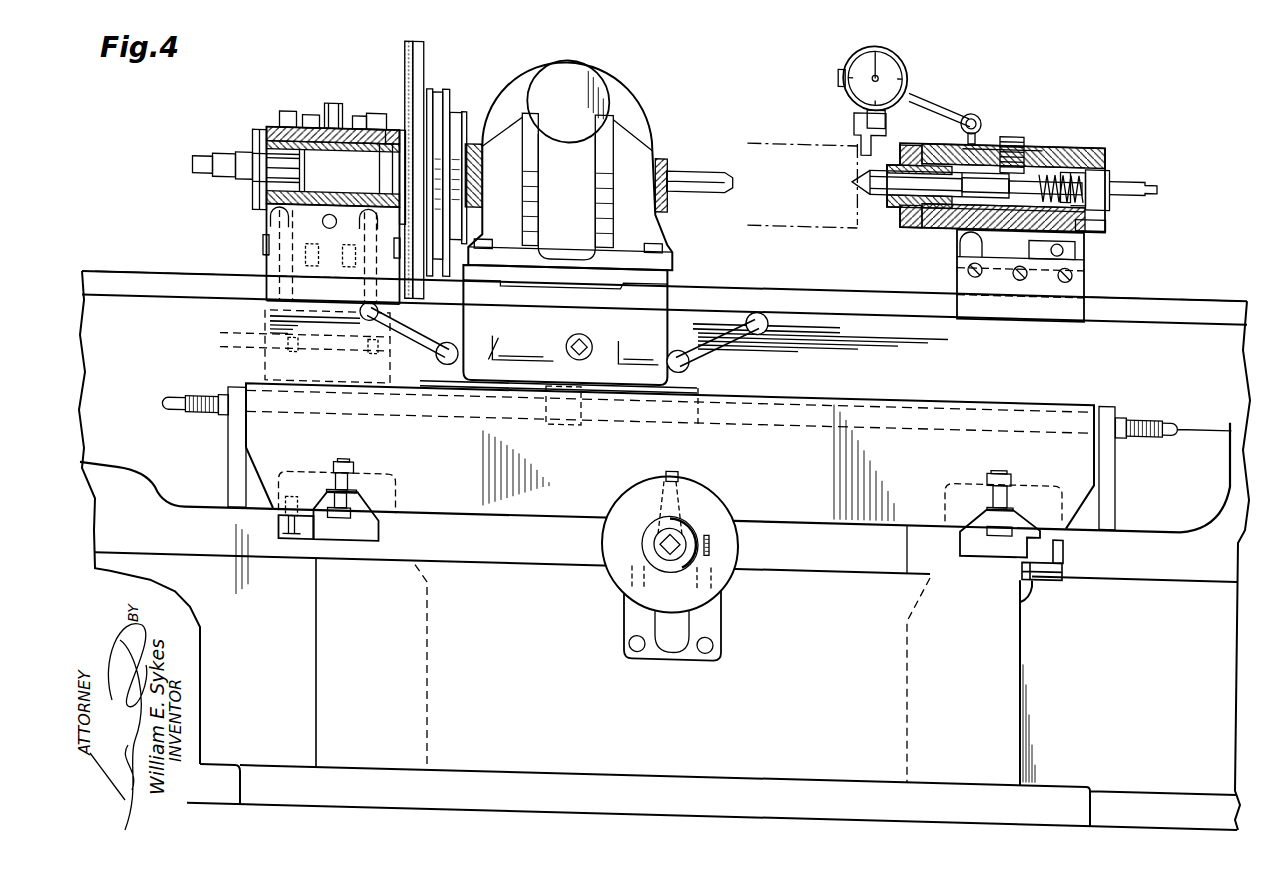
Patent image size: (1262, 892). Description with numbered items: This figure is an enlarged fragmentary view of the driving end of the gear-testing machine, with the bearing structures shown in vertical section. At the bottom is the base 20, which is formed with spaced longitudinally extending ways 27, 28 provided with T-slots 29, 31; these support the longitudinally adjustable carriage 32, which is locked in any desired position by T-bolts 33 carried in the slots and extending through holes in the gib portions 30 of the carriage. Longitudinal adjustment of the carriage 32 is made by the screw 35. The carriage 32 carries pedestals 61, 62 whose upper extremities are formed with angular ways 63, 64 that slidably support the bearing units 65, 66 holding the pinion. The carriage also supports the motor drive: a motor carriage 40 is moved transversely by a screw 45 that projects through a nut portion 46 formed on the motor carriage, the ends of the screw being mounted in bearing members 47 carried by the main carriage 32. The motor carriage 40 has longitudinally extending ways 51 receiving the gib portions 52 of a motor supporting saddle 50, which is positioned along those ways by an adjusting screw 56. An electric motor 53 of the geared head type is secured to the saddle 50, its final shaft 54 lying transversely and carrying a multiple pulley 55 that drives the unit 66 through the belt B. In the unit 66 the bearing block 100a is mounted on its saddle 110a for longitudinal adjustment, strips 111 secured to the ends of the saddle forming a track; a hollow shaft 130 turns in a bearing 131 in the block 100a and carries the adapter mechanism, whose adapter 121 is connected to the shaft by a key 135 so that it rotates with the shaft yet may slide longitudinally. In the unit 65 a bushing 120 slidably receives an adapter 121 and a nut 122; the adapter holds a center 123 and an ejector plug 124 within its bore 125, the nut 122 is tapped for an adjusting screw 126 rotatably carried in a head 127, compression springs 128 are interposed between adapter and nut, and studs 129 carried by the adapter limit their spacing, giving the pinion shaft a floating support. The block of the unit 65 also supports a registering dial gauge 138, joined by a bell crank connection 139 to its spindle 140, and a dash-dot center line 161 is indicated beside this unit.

The base 20 is at (664, 550).
The longitudinally extending way 27 is at (1063, 530).
The longitudinally extending way 28 is at (350, 545).
The T-slot 29 is at (1062, 550).
The gib portion 30 is at (313, 513).
The T-slot 31 is at (345, 542).
The carriage 32 is at (665, 499).
The T-bolt 33 is at (335, 460).
The screw 35 is at (660, 550).
The motor carriage 40 is at (700, 355).
The transverse screw 45 is at (1150, 420).
The nut portion 46 is at (570, 425).
The bearing member 47 is at (226, 470).
The motor supporting saddle 50 is at (565, 325).
The longitudinally extending way 51 is at (682, 370).
The gib portion 52 is at (690, 385).
The electric motor 53 is at (645, 112).
The final shaft 54 is at (700, 176).
The multiple pulley 55 is at (437, 90).
The adjusting screw 56 is at (580, 340).
The pedestal 61 is at (1110, 292).
The pedestal 62 is at (148, 263).
The angular way 63 is at (1208, 292).
The angular way 64 is at (203, 270).
The bearing unit 65 is at (1110, 134).
The bearing unit 66 is at (232, 98).
The bearing block 100a is at (381, 128).
The saddle 110a is at (265, 258).
The strip 111 is at (265, 245).
The bushing 120 is at (1025, 140).
The adapter 121 is at (1015, 150).
The nut 122 is at (277, 165).
The center 123 is at (855, 190).
The ejector plug 124 is at (960, 200).
The bore 125 is at (935, 170).
The adjusting screw 126 is at (1150, 185).
The head 127 is at (207, 155).
The compression spring 128 is at (270, 178).
The stud 129 is at (312, 127).
The hollow shaft 130 is at (258, 140).
The bearing 131 is at (383, 128).
The key 135 is at (330, 110).
The registering dial gauge 138 is at (905, 75).
The indicator clamp 139 is at (855, 128).
The spindle 140 is at (920, 105).
The center line 161 is at (780, 126).
The belt B is at (420, 44).